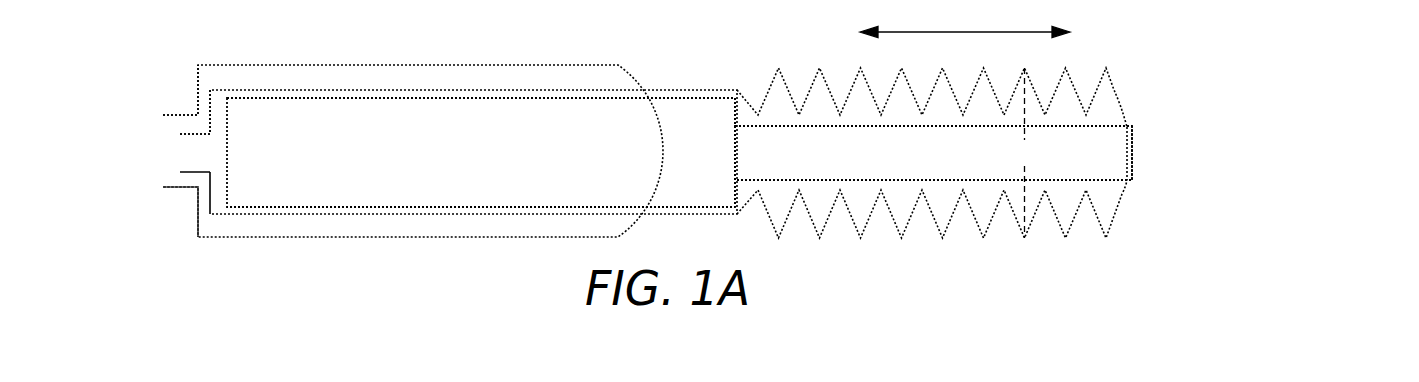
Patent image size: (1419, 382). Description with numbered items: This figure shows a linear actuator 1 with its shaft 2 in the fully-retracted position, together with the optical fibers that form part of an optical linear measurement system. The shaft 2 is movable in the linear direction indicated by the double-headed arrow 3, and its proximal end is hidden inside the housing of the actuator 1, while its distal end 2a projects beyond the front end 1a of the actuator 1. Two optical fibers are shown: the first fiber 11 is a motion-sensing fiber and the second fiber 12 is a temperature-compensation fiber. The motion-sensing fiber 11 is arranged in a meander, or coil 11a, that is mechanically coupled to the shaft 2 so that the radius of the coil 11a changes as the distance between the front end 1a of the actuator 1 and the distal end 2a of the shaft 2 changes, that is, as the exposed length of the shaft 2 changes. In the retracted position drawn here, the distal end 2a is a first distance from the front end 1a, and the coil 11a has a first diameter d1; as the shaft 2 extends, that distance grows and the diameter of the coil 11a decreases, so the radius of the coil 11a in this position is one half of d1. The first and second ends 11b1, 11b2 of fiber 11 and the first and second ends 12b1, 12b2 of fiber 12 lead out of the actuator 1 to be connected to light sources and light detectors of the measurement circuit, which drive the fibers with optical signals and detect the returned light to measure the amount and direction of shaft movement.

The linear actuator 1 is at (435, 170).
The front end of the actuator 1a is at (737, 162).
The shaft 2 is at (914, 167).
The distal end of the shaft 2a is at (1132, 155).
The double-headed arrow 3 is at (970, 32).
The first optical fiber 11 is at (677, 126).
The coil 11a is at (1115, 90).
The first end of fiber 11 11b1 is at (195, 132).
The second end of fiber 11 11b2 is at (195, 170).
The second optical fiber 12 is at (547, 65).
The first end of fiber 12 12b1 is at (183, 112).
The second end of fiber 12 12b2 is at (187, 189).
The first diameter of the coil d1 is at (1023, 153).